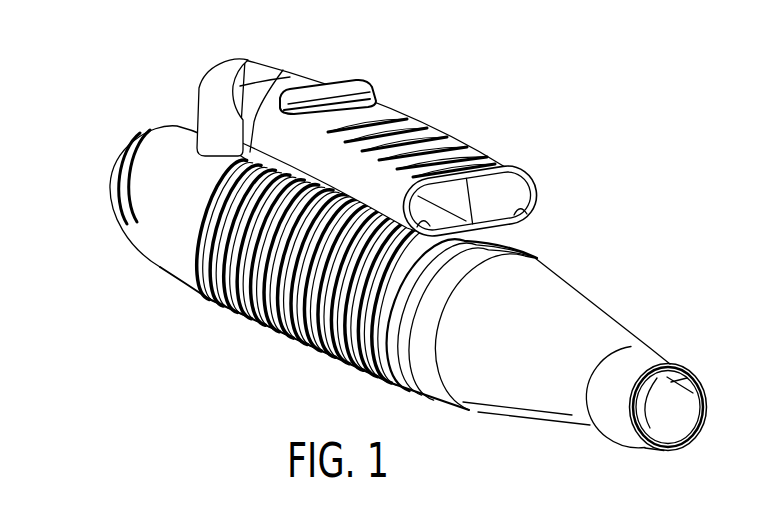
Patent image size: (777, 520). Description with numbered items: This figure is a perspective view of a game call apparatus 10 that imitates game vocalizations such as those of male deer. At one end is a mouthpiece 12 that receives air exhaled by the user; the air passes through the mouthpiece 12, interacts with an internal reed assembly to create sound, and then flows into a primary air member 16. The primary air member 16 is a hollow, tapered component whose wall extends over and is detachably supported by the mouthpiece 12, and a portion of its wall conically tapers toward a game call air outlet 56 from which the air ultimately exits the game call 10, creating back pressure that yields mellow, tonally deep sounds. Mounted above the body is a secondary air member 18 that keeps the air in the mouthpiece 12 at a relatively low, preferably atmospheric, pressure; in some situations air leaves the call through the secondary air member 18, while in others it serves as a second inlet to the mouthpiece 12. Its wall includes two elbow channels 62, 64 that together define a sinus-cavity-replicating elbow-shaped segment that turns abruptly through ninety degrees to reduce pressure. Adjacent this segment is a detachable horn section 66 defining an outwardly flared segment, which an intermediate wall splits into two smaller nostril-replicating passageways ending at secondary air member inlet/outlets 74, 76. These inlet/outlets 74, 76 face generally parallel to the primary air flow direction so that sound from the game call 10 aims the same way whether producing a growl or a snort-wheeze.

The game call apparatus 10 is at (398, 258).
The mouthpiece 12 is at (162, 268).
The primary air member 16 is at (571, 378).
The secondary air member 18 is at (415, 161).
The game call air outlet 56 is at (646, 436).
The elbow channel 62 is at (197, 98).
The elbow channel 64 is at (290, 68).
The horn section 66 is at (494, 203).
The secondary air member inlet/outlet 74 is at (424, 228).
The secondary air member inlet/outlet 76 is at (524, 214).